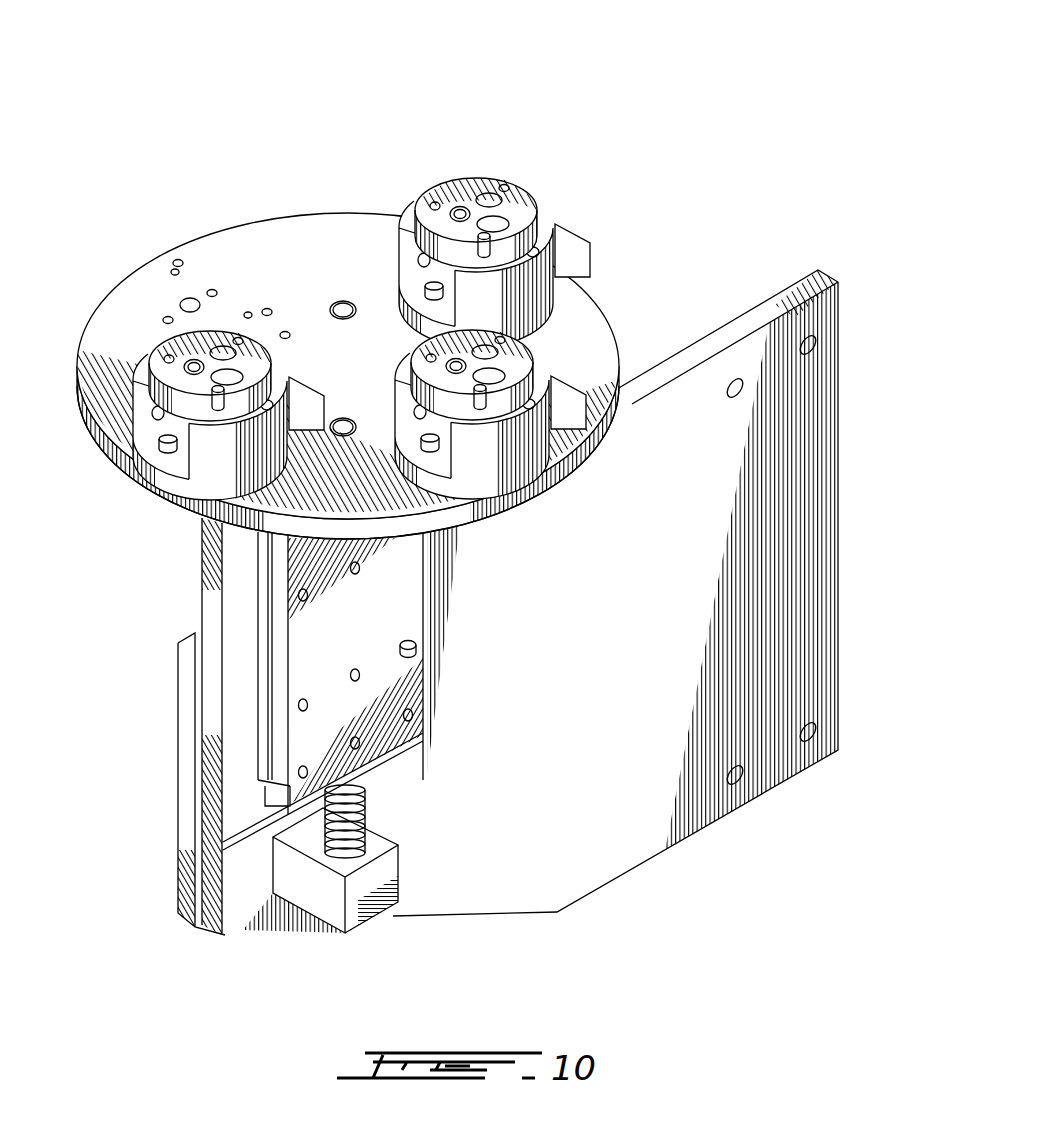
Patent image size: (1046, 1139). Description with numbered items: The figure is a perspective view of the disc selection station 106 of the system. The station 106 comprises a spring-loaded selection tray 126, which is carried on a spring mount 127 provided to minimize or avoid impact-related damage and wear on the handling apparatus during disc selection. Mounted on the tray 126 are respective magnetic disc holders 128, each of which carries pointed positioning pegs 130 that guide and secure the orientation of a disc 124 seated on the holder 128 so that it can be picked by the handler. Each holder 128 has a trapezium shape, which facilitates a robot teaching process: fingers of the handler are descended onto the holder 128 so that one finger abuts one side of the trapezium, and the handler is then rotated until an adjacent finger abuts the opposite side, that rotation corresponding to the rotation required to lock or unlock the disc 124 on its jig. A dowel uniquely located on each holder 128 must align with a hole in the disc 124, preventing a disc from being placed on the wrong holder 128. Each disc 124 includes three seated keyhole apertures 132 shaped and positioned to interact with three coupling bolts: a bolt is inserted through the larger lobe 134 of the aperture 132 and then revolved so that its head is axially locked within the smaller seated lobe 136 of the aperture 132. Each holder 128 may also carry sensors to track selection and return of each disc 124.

The disc selection station 106 is at (585, 112).
The disc 124 is at (540, 186).
The spring-loaded selection tray 126 is at (267, 243).
The spring mount 127 is at (366, 820).
The magnetic disc holder 128 is at (203, 460).
The pointed positioning peg 130 is at (169, 359).
The seated keyhole aperture 132 is at (481, 192).
The larger lobe 134 is at (482, 390).
The smaller seated lobe 136 is at (457, 384).